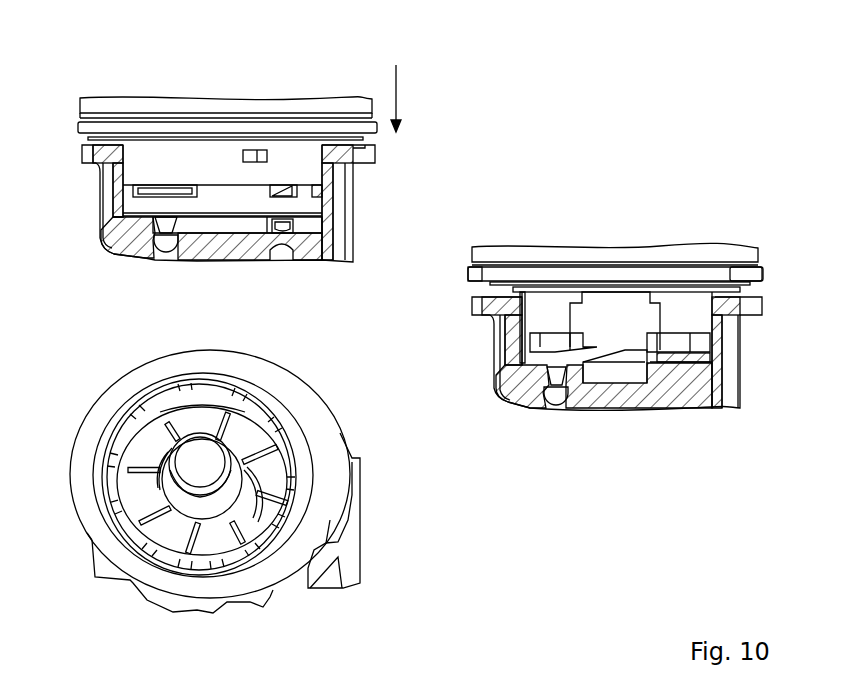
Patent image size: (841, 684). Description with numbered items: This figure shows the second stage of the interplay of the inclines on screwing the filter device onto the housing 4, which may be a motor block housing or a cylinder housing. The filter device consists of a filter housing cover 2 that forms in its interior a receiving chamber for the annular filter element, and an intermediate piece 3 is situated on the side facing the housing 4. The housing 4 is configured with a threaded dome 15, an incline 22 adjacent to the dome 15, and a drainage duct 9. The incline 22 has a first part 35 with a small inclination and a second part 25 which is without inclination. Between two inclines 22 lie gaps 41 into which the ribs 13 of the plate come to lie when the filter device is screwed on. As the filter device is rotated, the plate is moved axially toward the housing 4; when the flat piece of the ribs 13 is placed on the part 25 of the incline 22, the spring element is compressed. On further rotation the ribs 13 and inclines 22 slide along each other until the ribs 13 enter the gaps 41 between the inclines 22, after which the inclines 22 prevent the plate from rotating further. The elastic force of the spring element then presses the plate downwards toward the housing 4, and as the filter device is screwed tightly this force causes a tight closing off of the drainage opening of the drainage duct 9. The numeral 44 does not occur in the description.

The filter housing cover 2 is at (163, 110).
The intermediate piece 3 is at (282, 157).
The housing 4 is at (106, 208).
The drainage duct 9 is at (163, 254).
The ribs 13 is at (563, 345).
The dome 15 is at (200, 432).
The incline 22 is at (152, 463).
The second part of the incline 25 is at (250, 468).
The first part of the incline 35 is at (270, 533).
The gaps 41 is at (157, 457).
The gap 44 is at (364, 139).